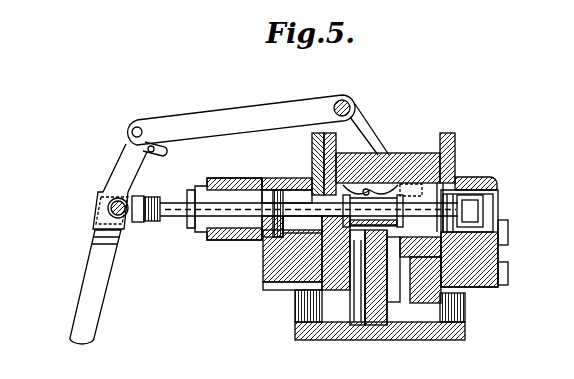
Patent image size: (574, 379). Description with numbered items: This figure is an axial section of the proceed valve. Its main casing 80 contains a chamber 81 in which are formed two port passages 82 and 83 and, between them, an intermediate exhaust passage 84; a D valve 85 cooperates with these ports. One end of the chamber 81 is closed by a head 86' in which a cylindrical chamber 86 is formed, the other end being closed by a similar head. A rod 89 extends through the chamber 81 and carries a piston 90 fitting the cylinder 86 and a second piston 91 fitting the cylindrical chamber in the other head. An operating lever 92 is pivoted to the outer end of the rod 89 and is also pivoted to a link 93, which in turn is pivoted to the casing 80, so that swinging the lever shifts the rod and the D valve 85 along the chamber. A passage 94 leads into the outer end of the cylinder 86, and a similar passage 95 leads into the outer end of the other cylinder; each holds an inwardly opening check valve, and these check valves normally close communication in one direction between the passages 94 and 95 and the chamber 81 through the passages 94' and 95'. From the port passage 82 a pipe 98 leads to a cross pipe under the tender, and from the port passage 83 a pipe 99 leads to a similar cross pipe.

The main casing 80 is at (423, 152).
The chamber 81 is at (455, 162).
The port passage 82 is at (405, 270).
The port passage 83 is at (350, 298).
The exhaust passage 84 is at (376, 290).
The D valve 85 is at (358, 213).
The cylindrical chamber 86 is at (486, 232).
The head 86' is at (494, 173).
The rod 89 is at (235, 243).
The piston 90 is at (427, 195).
The piston 91 is at (258, 282).
The operating lever 92 is at (120, 186).
The link 93 is at (258, 125).
The passage 94 is at (494, 211).
The passage 94' is at (418, 150).
The passage 95 is at (254, 228).
The passage 95' is at (354, 150).
The pipe 98 is at (465, 309).
The pipe 99 is at (296, 309).